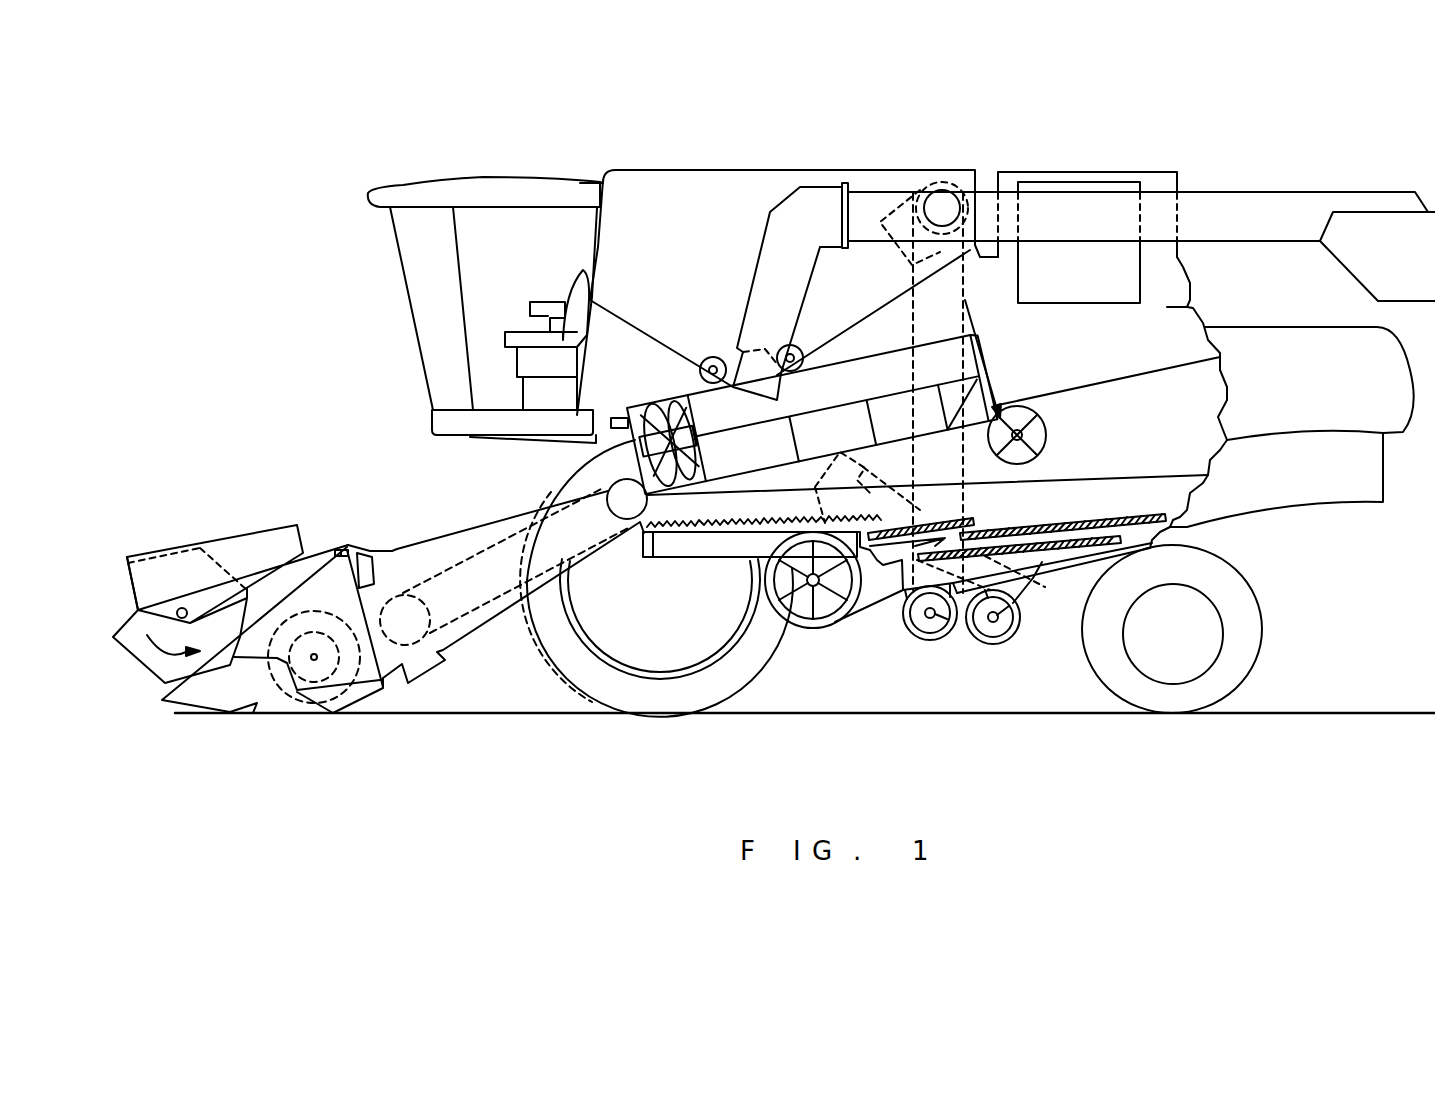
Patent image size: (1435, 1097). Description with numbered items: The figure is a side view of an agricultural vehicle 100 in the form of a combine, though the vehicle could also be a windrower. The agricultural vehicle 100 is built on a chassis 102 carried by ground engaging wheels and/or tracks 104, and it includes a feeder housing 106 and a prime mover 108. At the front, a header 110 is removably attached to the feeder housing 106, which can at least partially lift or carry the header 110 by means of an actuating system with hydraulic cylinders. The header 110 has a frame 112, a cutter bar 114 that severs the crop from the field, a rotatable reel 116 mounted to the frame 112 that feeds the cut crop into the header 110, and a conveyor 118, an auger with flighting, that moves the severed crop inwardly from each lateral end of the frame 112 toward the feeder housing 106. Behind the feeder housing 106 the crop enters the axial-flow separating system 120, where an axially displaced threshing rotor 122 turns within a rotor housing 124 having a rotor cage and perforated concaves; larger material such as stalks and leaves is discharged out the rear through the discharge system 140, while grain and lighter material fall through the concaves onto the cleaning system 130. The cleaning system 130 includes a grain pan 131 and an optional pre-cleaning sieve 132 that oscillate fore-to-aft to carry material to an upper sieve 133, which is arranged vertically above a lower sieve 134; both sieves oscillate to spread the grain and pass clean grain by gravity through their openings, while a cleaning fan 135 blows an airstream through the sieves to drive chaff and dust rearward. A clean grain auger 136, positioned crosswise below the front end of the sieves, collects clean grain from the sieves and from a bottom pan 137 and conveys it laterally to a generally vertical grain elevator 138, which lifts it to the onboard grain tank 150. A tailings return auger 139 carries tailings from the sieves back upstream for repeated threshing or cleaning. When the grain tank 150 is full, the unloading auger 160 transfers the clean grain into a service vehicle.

The agricultural vehicle 100 is at (477, 160).
The chassis 102 is at (1190, 528).
The ground engaging wheels and/or tracks 104 is at (417, 301).
The feeder housing 106 is at (432, 538).
The prime mover 108 is at (1072, 185).
The header 110 is at (223, 527).
The frame 112 is at (363, 698).
The cutter bar 114 is at (178, 700).
The rotatable reel 116 is at (120, 602).
The conveyor 118 is at (317, 682).
The separating system 120 is at (567, 463).
The threshing rotor 122 is at (656, 403).
The rotor housing 124 is at (855, 380).
The cleaning system 130 is at (888, 630).
The grain pan 131 is at (653, 557).
The pre-cleaning sieve 132 is at (967, 518).
The upper sieve 133 is at (1100, 514).
The lower sieve 134 is at (1047, 550).
The cleaning fan 135 is at (820, 617).
The clean grain auger 136 is at (928, 640).
The bottom pan 137 is at (1090, 550).
The grain elevator 138 is at (963, 297).
The tailings return auger 139 is at (873, 490).
The discharge system 140 is at (1343, 517).
The grain tank 150 is at (657, 187).
The unloading auger 160 is at (1263, 200).